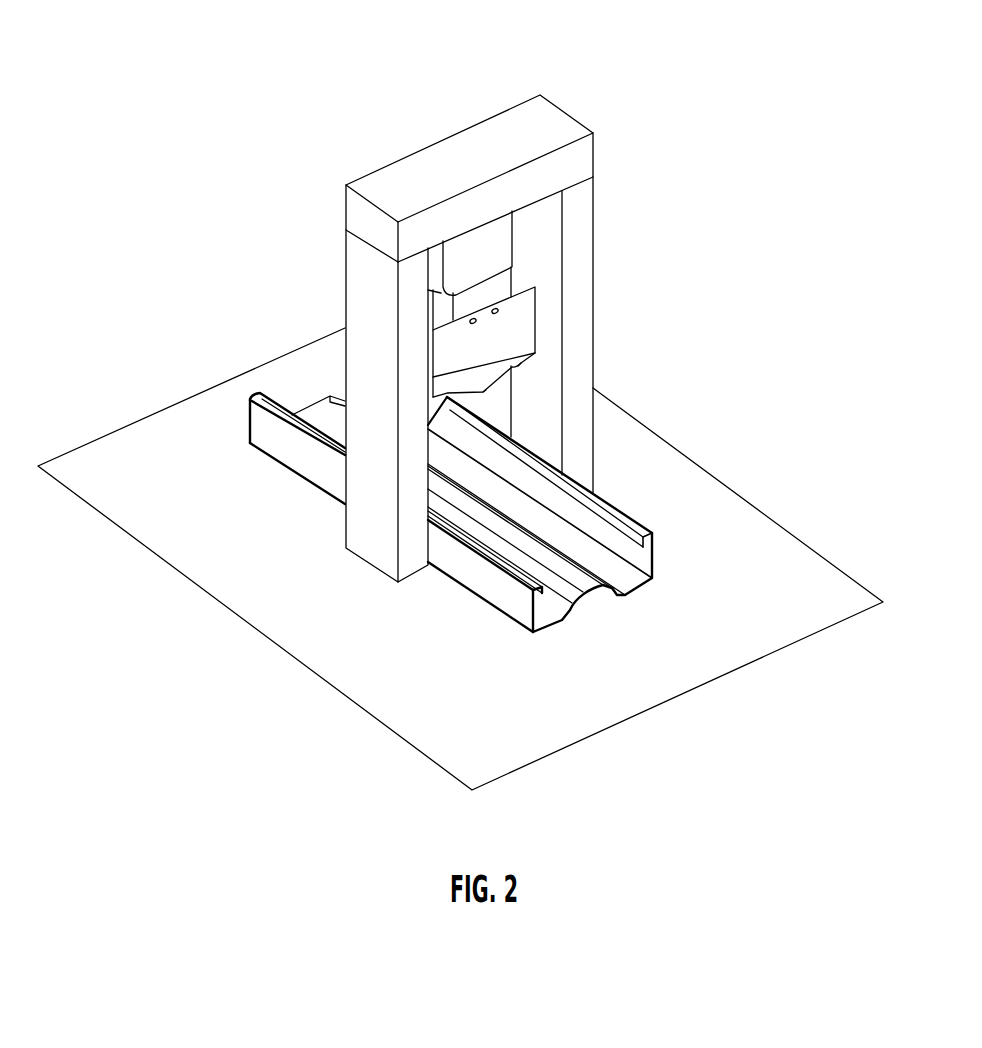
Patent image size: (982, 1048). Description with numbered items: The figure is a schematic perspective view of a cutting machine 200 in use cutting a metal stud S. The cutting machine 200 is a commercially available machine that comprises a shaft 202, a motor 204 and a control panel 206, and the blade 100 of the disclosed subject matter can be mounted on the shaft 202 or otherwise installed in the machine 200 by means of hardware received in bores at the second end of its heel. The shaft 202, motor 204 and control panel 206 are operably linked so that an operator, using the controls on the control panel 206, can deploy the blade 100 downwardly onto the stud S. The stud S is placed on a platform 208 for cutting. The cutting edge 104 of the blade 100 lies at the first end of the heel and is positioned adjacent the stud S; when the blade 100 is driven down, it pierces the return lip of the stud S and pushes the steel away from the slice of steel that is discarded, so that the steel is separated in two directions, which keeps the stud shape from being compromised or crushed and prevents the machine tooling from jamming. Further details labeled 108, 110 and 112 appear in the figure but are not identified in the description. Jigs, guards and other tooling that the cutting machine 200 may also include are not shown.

The blade 100 is at (535, 327).
The cutting edge 104 is at (535, 353).
The anvil 108 is at (447, 396).
The punch 110 is at (483, 393).
The die 112 is at (520, 364).
The cutting machine 200 is at (589, 68).
The shaft 202 is at (490, 293).
The motor 204 is at (500, 240).
The control panel 206 is at (572, 166).
The platform 208 is at (797, 567).
The stud S is at (632, 520).